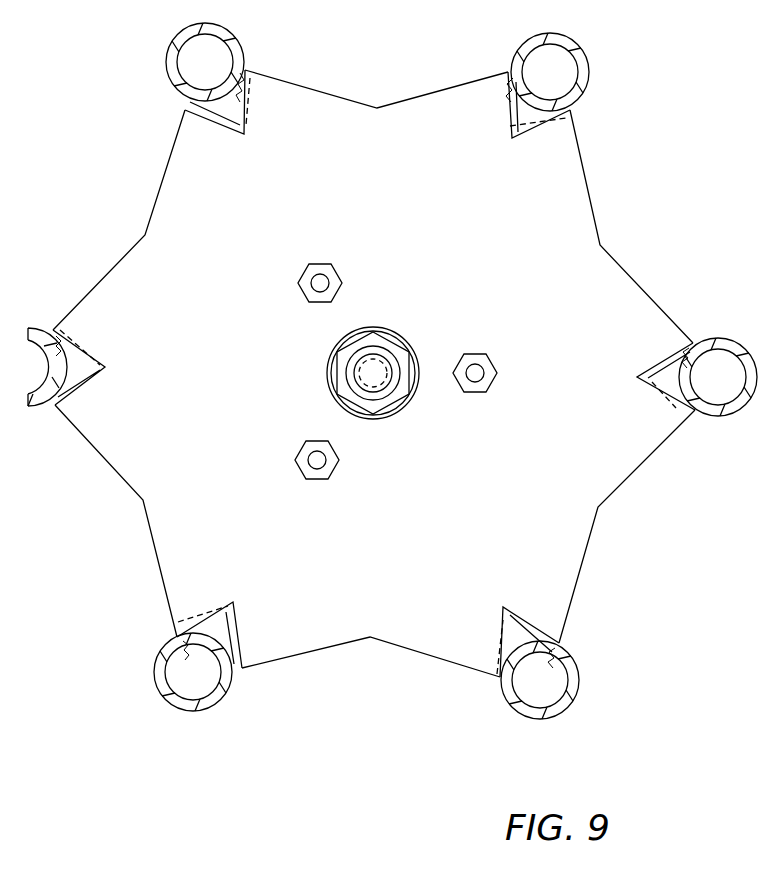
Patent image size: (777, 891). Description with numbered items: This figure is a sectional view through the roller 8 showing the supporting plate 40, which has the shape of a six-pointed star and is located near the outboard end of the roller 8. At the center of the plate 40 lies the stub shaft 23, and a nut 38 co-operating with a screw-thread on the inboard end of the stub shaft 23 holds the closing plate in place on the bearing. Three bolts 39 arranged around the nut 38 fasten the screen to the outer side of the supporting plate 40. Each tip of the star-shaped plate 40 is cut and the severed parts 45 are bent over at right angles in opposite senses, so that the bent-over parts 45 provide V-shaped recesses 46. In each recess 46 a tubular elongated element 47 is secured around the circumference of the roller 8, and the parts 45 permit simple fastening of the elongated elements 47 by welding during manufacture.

The roller 8 is at (366, 650).
The stub shaft 23 is at (365, 374).
The nut 38 is at (348, 352).
The bolts 39 is at (315, 282).
The supporting plate 40 is at (400, 118).
The severed parts 45 is at (220, 117).
The V-shaped recesses 46 is at (230, 102).
The tubular elongated elements 47 is at (228, 43).